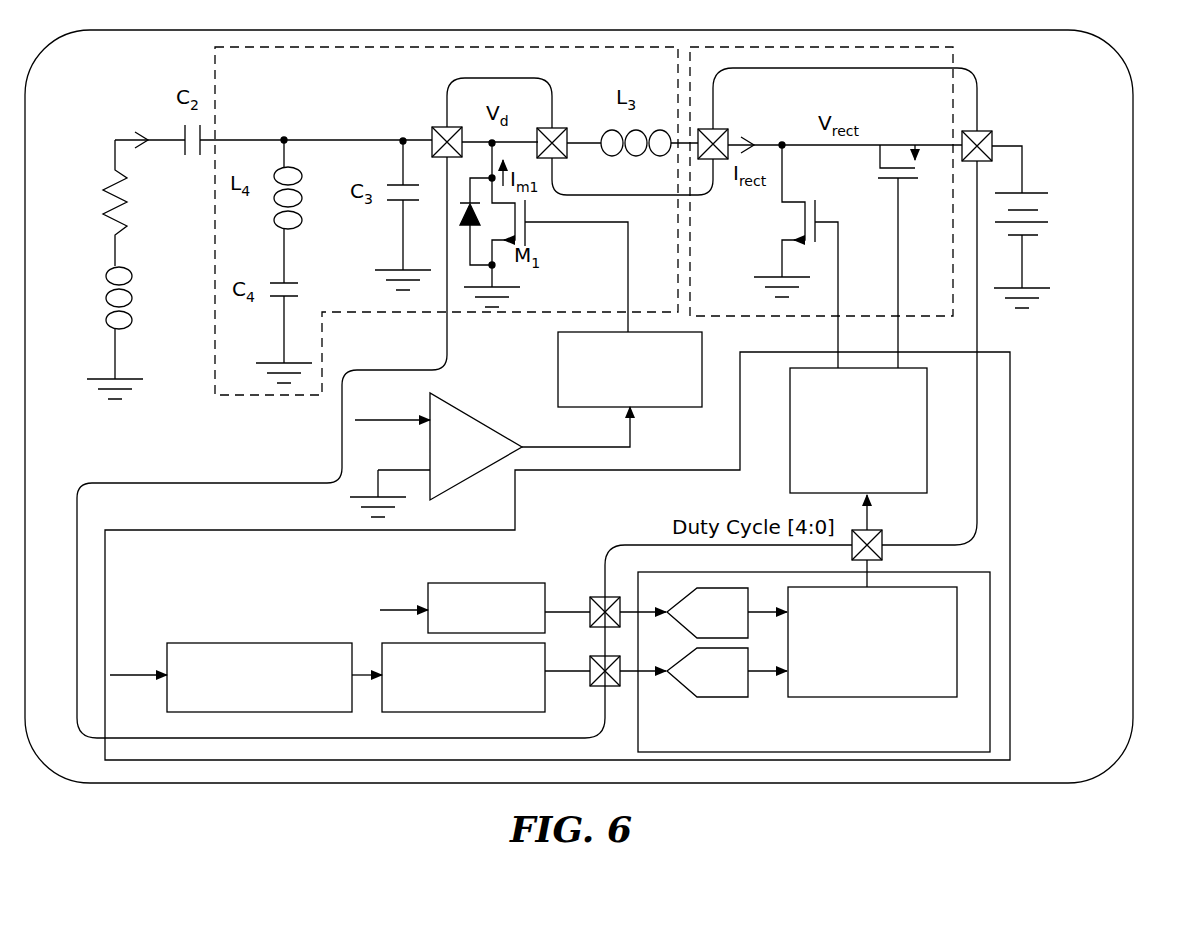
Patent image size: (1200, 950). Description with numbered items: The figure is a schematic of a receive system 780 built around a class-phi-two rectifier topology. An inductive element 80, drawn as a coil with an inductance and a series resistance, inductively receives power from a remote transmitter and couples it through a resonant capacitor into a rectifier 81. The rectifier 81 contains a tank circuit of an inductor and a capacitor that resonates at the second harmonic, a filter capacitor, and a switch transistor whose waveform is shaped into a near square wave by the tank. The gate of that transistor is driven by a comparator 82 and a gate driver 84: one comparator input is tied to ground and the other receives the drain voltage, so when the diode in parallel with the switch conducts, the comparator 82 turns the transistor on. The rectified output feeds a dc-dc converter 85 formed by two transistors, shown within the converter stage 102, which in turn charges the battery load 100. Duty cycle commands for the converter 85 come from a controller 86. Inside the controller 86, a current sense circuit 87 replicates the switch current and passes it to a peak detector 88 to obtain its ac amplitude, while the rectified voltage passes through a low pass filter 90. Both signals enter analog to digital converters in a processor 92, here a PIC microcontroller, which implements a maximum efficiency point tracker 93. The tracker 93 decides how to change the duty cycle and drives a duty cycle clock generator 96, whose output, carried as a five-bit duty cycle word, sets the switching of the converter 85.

The wireless power receiver system 780 is at (1146, 128).
The inductive element 80 is at (90, 300).
The rectifier 81 is at (213, 58).
The comparator 82 is at (482, 461).
The gate driver 84 is at (643, 396).
The dc-dc converter 85 is at (956, 52).
The controller 86 is at (1010, 447).
The current sense circuit 87 is at (272, 705).
The peak detector 88 is at (476, 705).
The low pass filter 90 is at (526, 624).
The processor 92 is at (805, 662).
The maximum efficiency point tracker 93 is at (886, 690).
The duty cycle clock generator 96 is at (871, 484).
The battery load 100 is at (1119, 142).
The rectifier transistors 102 is at (928, 102).